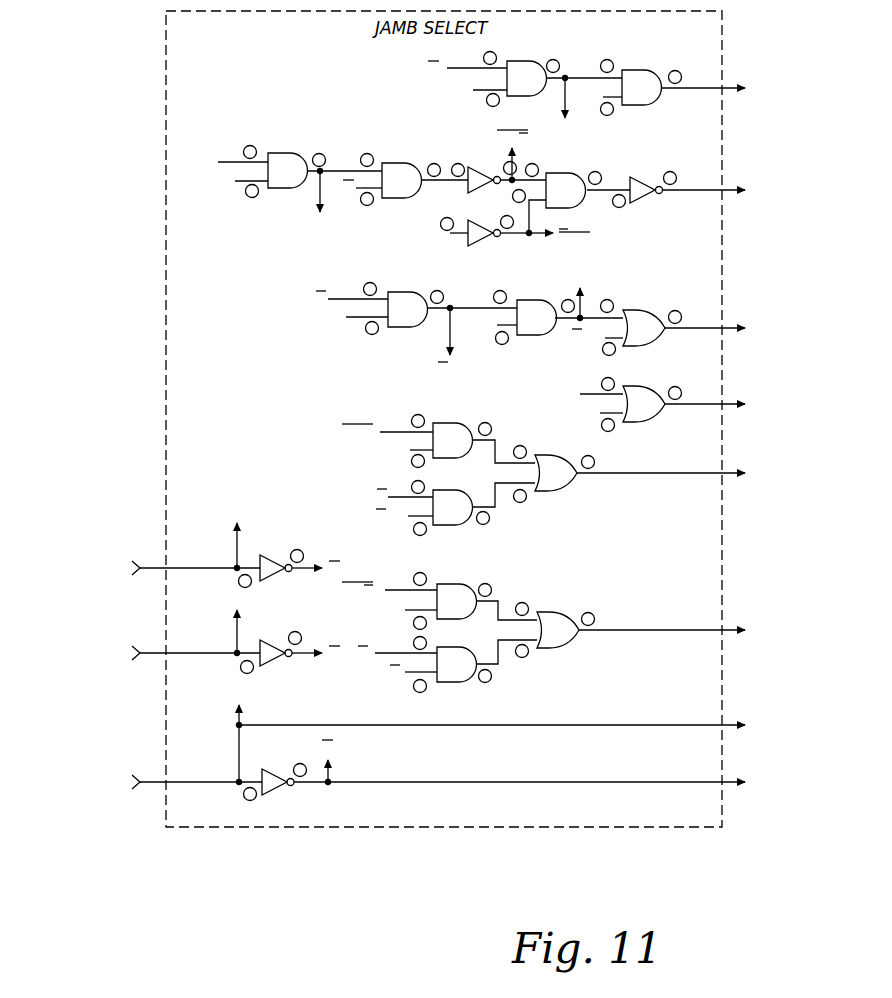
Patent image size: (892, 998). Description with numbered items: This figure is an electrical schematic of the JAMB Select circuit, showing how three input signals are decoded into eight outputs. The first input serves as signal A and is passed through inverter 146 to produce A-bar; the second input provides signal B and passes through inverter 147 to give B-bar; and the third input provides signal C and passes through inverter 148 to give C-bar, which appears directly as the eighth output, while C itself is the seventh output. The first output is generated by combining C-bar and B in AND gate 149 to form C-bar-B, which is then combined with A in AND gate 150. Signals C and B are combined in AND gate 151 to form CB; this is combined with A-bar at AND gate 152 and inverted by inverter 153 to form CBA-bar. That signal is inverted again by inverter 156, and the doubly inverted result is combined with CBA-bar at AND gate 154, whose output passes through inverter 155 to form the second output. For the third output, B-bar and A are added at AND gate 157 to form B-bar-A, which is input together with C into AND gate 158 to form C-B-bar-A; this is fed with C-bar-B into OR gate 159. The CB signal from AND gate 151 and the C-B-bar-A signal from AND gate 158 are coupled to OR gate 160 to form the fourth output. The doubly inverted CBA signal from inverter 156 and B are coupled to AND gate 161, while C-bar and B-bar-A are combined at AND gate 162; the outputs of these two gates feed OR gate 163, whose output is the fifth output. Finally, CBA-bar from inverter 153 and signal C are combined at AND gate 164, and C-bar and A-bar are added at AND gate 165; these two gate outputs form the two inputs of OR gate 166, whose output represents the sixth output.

The inverter 146 is at (279, 555).
The inverter 147 is at (280, 640).
The inverter 148 is at (278, 769).
The AND gate 149 is at (529, 61).
The AND gate 150 is at (640, 70).
The AND gate 151 is at (290, 153).
The AND gate 152 is at (400, 163).
The inverter 153 is at (476, 167).
The AND gate 154 is at (566, 173).
The inverter 155 is at (644, 177).
The inverter 156 is at (479, 246).
The AND gate 157 is at (400, 292).
The AND gate 158 is at (535, 300).
The OR gate 159 is at (645, 310).
The OR gate 160 is at (650, 386).
The AND gate 161 is at (455, 423).
The AND gate 162 is at (455, 525).
The OR gate 163 is at (558, 491).
The AND gate 164 is at (450, 584).
The AND gate 165 is at (452, 682).
The OR gate 166 is at (563, 612).